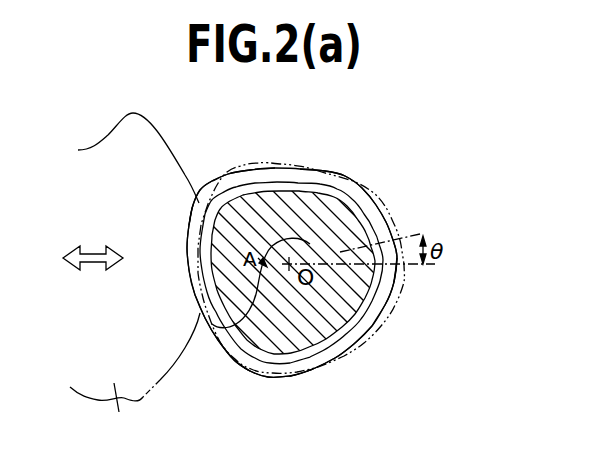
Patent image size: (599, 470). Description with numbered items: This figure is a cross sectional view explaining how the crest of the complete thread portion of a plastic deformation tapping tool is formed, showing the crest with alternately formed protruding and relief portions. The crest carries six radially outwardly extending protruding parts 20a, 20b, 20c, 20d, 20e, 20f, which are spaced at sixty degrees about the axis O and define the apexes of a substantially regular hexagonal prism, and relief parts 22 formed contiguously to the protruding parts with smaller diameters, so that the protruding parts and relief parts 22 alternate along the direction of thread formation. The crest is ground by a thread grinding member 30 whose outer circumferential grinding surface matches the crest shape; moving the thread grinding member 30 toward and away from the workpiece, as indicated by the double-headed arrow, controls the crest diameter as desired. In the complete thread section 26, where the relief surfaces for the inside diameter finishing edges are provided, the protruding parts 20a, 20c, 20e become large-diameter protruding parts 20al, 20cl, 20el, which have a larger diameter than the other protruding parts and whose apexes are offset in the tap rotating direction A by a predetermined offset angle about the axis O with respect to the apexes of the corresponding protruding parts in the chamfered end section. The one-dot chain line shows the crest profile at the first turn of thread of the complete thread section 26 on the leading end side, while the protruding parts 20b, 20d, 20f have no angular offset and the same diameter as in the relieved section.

The complete thread section 26 is at (397, 156).
The relief parts 22 is at (288, 176).
The thread grinding member 30 is at (135, 277).
The large-diameter protruding part 20el is at (207, 196).
The protruding part 20e is at (245, 172).
The protruding part 20f is at (340, 176).
The large-diameter protruding part 20al is at (391, 236).
The protruding part 20a is at (398, 282).
The protruding part 20b is at (338, 350).
The large-diameter protruding part 20cl is at (266, 368).
The protruding part 20c is at (226, 352).
The protruding part 20d is at (193, 266).